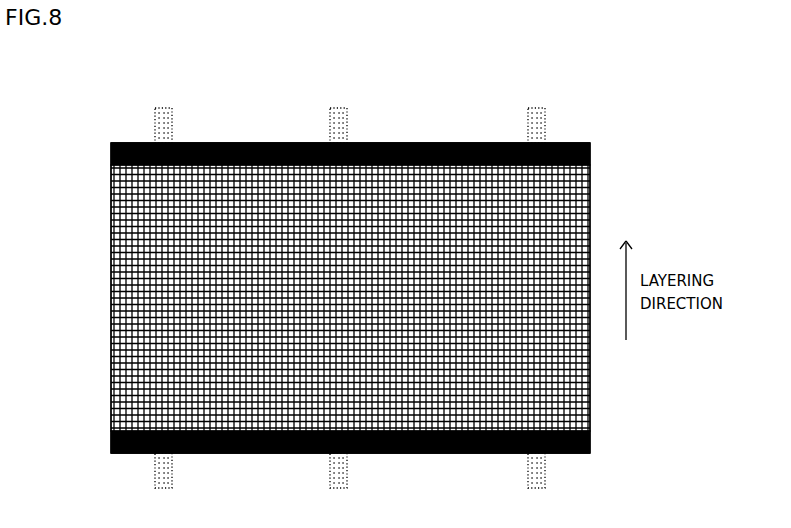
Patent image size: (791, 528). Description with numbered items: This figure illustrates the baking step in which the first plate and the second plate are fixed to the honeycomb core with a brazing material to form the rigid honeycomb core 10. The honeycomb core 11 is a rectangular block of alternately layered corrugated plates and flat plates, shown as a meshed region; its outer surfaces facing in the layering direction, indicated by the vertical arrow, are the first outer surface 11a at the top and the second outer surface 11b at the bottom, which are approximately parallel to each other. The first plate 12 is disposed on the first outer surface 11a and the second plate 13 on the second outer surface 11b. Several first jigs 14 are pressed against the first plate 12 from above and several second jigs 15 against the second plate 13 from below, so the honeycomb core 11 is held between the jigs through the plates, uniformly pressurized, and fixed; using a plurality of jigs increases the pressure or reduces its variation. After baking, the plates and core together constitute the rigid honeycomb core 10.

The rigid honeycomb core 10 is at (607, 157).
The honeycomb core 11 is at (147, 302).
The first outer surface 11a is at (406, 143).
The second outer surface 11b is at (432, 451).
The first plate 12 is at (111, 146).
The second plate 13 is at (110, 437).
The first jig 14 is at (338, 118).
The second jig 15 is at (340, 478).